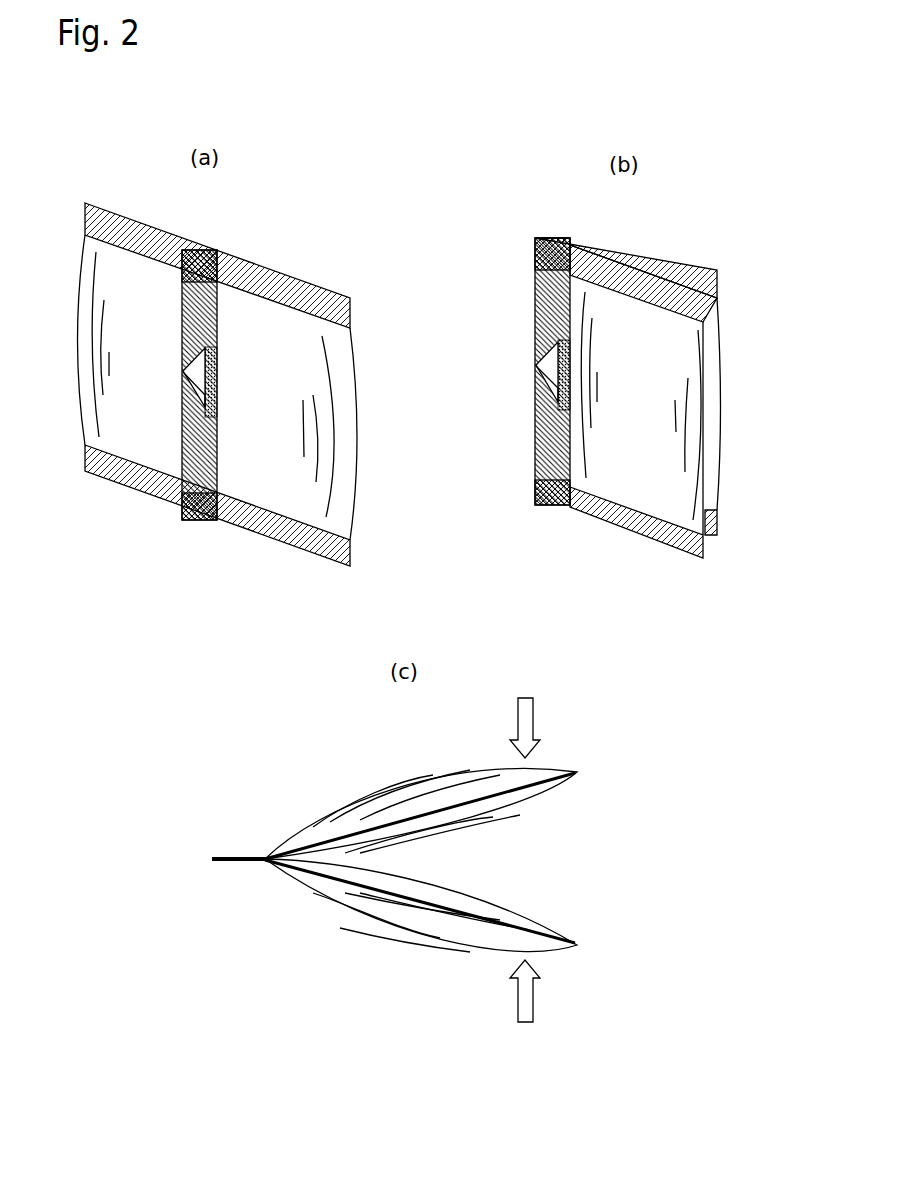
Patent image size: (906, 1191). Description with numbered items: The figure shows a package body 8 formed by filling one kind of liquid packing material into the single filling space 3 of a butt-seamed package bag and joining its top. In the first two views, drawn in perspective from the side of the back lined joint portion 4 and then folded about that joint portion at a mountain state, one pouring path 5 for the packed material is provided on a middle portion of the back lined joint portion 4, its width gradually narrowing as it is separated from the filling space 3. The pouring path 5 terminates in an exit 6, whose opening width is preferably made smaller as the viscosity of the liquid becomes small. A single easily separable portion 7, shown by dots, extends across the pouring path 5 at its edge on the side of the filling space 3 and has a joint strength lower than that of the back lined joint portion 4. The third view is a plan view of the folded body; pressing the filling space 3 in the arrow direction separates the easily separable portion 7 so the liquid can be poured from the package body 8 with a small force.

The filling space 3 is at (127, 332).
The back lined joint portion 4 is at (197, 305).
The pouring path 5 is at (180, 397).
The exit 6 is at (182, 372).
The easily separable portion 7 is at (218, 382).
The package body 8 is at (370, 373).